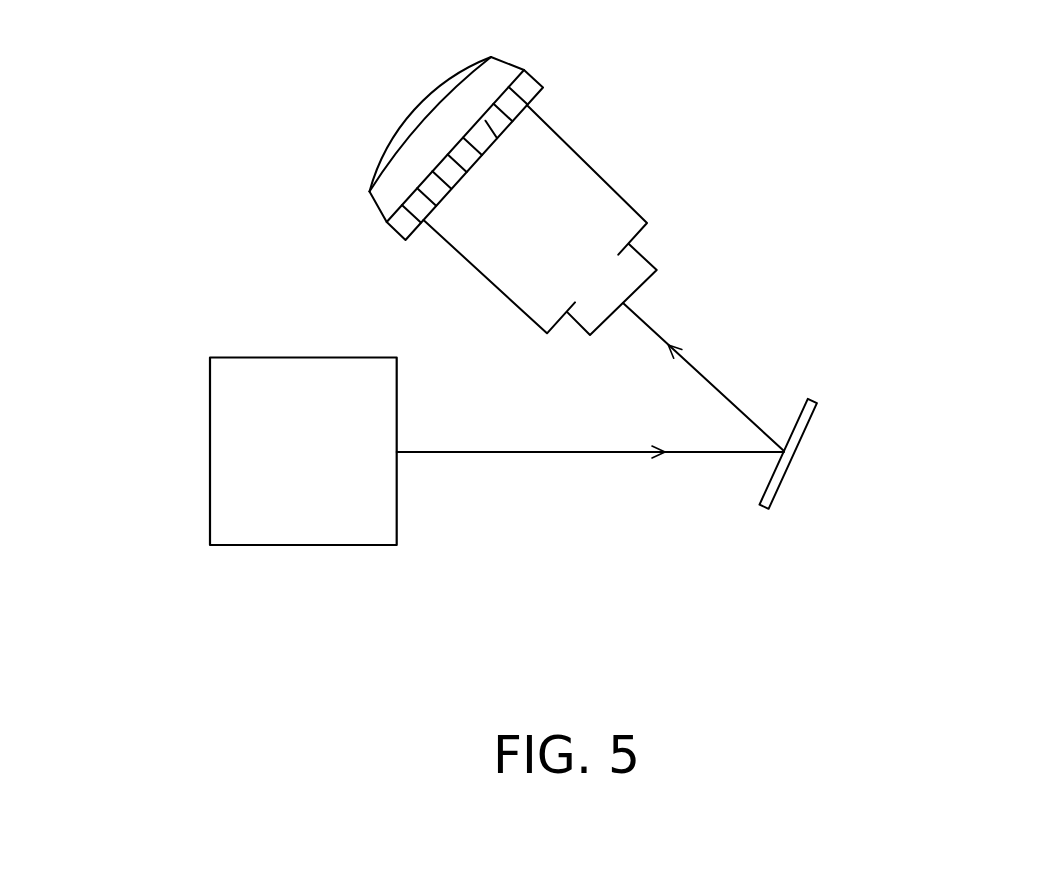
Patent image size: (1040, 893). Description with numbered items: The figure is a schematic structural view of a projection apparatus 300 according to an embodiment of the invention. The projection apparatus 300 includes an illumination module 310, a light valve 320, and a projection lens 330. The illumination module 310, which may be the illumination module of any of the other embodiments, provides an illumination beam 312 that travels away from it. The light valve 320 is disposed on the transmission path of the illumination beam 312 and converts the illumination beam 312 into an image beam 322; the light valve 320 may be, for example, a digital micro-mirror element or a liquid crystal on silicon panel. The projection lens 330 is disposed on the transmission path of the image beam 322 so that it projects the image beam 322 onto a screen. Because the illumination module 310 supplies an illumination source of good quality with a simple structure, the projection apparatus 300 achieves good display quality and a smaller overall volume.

The projection apparatus 300 is at (606, 360).
The illumination module 310 is at (308, 520).
The illumination beam 312 is at (553, 452).
The light valve 320 is at (795, 433).
The image beam 322 is at (703, 373).
The projection lens 330 is at (567, 199).